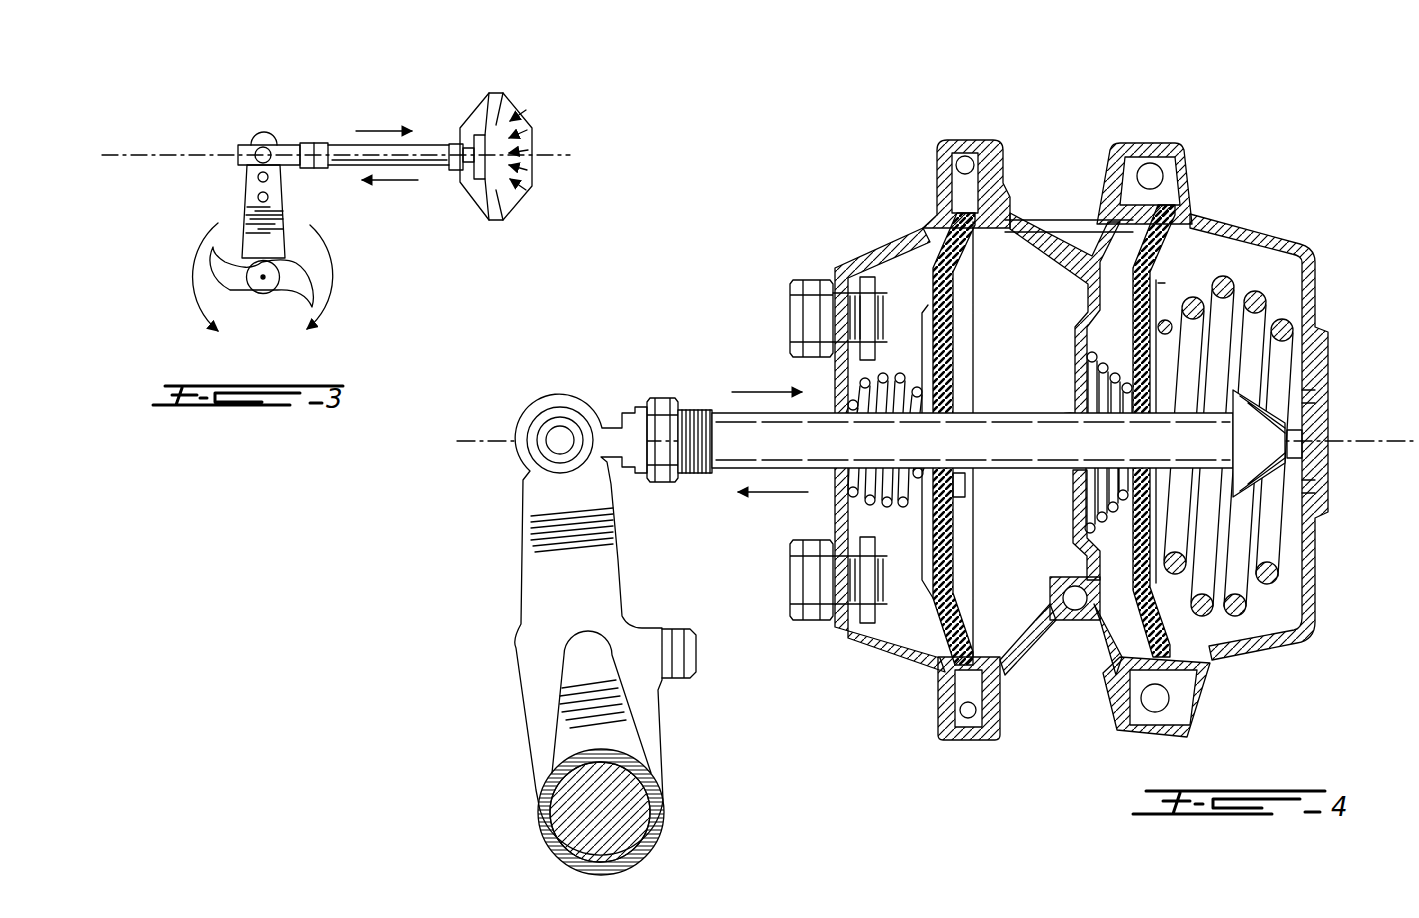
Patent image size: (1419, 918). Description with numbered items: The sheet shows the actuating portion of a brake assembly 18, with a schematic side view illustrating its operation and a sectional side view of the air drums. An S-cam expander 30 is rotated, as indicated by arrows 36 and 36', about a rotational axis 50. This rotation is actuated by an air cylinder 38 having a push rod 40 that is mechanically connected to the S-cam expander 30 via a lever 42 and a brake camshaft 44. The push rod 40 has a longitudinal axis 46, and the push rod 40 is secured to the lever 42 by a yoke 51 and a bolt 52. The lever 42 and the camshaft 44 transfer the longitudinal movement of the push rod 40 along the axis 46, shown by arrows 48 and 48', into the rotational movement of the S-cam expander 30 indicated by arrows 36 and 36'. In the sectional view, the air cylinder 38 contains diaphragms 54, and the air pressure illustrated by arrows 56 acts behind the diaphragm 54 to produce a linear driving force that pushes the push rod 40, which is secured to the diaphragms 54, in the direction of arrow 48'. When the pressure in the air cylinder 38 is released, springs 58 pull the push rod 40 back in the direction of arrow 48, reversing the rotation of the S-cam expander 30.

In FIG. 3, the brake actuator 18 is at (622, 111).
In FIG. 4, the brake actuator 18 is at (1253, 112).
In FIG. 3, the S-cam expander 30 is at (232, 290).
In FIG. 3, the rotation arrow 36 is at (366, 277).
In FIG. 3, the rotation arrow 36' is at (162, 277).
In FIG. 3, the air cylinder 38 is at (460, 108).
In FIG. 4, the air cylinder 38 is at (1256, 222).
In FIG. 3, the push rod 40 is at (347, 152).
In FIG. 4, the push rod 40 is at (730, 418).
In FIG. 3, the lever 42 is at (257, 210).
In FIG. 4, the lever 42 is at (541, 690).
In FIG. 3, the brake camshaft 44 is at (263, 277).
In FIG. 4, the brake camshaft 44 is at (622, 812).
In FIG. 3, the longitudinal axis 46 is at (139, 153).
In FIG. 4, the longitudinal axis 46 is at (1346, 446).
In FIG. 3, the movement arrow 48 is at (384, 95).
In FIG. 4, the movement arrow 48 is at (809, 450).
In FIG. 3, the movement arrow 48' is at (410, 218).
In FIG. 4, the movement arrow 48' is at (769, 519).
In FIG. 3, the rotational axis 50 is at (255, 295).
In FIG. 4, the rotational axis 50 is at (565, 842).
In FIG. 4, the yoke 51 is at (611, 419).
In FIG. 4, the bolt 52 is at (670, 492).
In FIG. 3, the diaphragm 54 is at (476, 135).
In FIG. 4, the diaphragm 54 is at (950, 257).
In FIG. 3, the air pressure arrows 56 is at (501, 124).
In FIG. 4, the spring 58 is at (1090, 358).